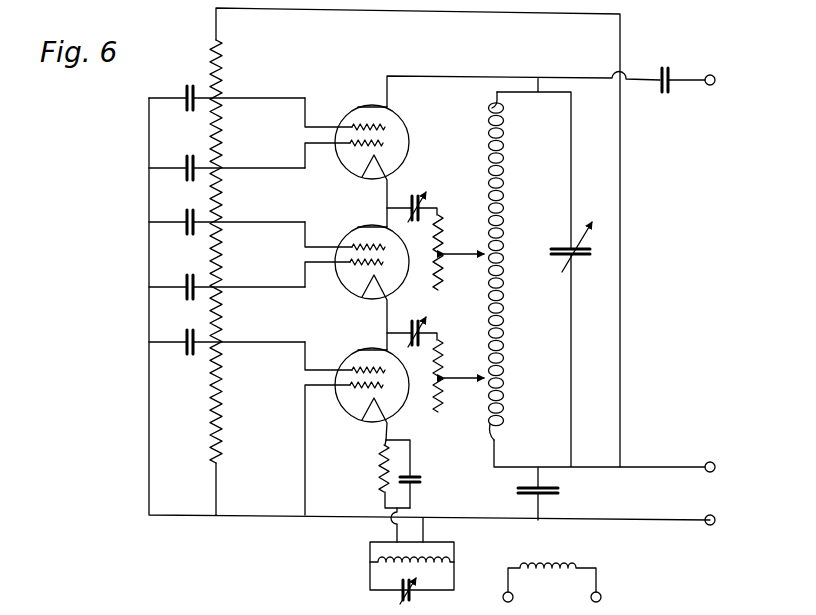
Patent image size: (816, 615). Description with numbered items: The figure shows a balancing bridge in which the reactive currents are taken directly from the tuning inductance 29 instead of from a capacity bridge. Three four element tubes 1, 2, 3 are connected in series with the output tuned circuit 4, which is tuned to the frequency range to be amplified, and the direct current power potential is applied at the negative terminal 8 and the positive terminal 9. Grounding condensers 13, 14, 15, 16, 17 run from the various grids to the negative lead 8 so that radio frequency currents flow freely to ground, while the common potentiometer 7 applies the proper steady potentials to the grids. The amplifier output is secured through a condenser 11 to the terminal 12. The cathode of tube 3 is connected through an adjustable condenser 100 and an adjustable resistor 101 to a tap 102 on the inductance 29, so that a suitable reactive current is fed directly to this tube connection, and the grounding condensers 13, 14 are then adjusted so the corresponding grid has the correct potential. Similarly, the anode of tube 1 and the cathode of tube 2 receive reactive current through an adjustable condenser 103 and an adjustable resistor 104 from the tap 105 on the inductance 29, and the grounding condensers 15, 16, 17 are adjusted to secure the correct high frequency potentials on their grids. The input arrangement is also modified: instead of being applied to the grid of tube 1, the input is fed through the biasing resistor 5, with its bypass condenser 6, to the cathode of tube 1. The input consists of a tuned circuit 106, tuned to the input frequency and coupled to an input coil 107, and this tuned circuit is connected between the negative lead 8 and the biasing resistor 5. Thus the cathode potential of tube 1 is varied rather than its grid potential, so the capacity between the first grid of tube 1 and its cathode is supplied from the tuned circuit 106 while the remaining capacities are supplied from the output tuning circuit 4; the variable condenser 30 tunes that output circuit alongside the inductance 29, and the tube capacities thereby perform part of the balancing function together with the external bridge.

The four element tube 1 is at (400, 390).
The four element tube 2 is at (396, 282).
The four element tube 3 is at (409, 144).
The tuned circuit 4 is at (515, 266).
The biasing resistor 5 is at (380, 481).
The bypass condenser 6 is at (418, 483).
The potentiometer 7 is at (222, 95).
The terminal (negative lead) 8 is at (715, 516).
The terminal 9 is at (715, 463).
The condenser 11 is at (660, 72).
The terminal 12 is at (719, 72).
The grounding condenser 13 is at (186, 96).
The grounding condenser 14 is at (186, 166).
The grounding condenser 15 is at (186, 220).
The grounding condenser 16 is at (186, 285).
The grounding condenser 17 is at (186, 340).
The tuning inductance 29 is at (492, 265).
The variable tuning condenser 30 is at (590, 256).
The adjustable condenser 100 is at (402, 234).
The adjustable resistor 101 is at (452, 252).
The tap 102 is at (464, 266).
The adjustable condenser 103 is at (404, 358).
The adjustable resistor 104 is at (427, 376).
The tap 105 is at (499, 366).
The tuned circuit 106 is at (400, 600).
The input coil 107 is at (562, 548).